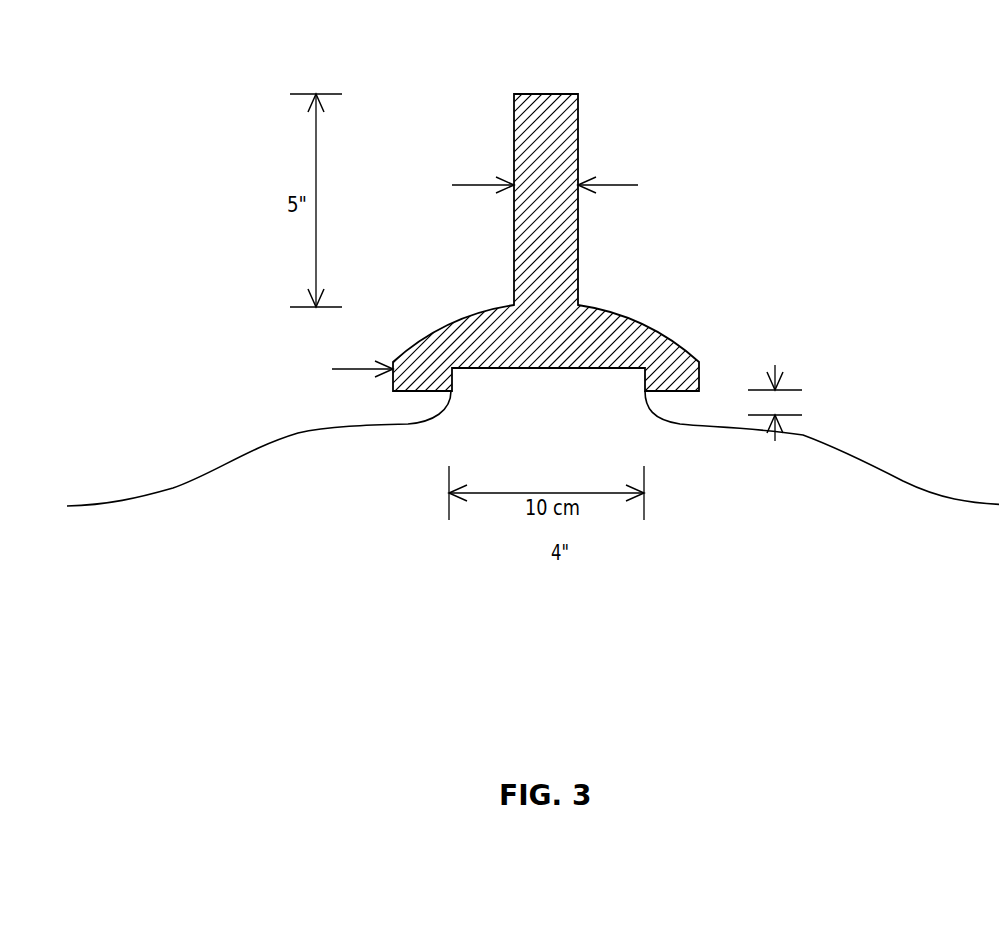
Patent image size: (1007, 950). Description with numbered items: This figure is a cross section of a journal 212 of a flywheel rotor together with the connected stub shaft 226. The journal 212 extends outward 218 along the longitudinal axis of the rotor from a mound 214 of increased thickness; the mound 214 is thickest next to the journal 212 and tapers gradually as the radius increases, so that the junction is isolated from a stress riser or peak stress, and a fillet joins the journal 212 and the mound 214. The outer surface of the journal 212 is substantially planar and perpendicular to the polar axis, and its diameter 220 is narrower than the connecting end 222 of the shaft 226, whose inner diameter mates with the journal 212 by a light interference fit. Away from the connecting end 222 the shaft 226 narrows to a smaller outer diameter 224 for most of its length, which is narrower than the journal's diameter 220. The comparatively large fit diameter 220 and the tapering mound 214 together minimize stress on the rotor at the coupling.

The journal 212 is at (560, 390).
The mound 214 is at (823, 438).
The outward extension of the journal 218 is at (850, 395).
The journal outer diameter 220 is at (547, 592).
The connecting end of the shaft 222 is at (289, 360).
The narrower outer diameter of the shaft 224 is at (732, 175).
The shaft 226 is at (536, 97).